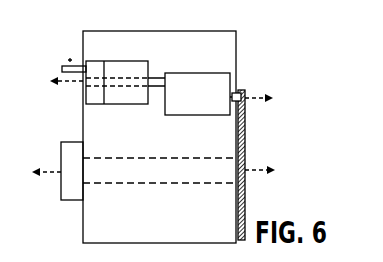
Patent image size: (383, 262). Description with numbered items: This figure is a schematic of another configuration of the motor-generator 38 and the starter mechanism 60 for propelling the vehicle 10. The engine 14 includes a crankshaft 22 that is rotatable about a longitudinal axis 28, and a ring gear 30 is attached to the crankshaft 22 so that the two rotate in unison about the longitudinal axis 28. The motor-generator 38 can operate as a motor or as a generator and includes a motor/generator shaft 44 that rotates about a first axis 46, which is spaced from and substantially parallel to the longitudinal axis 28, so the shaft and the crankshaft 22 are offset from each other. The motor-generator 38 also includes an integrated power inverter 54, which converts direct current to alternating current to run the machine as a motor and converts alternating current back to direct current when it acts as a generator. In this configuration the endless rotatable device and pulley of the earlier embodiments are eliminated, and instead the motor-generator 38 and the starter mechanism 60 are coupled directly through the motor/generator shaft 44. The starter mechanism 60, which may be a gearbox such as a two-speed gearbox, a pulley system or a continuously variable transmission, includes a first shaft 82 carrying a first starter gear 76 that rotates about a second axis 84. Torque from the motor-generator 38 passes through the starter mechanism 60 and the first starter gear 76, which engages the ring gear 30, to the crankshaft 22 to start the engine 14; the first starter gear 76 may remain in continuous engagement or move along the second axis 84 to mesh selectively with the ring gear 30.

The vehicle 10 is at (20, 5).
The engine 14 is at (216, 50).
The crankshaft 22 is at (143, 187).
The longitudinal axis 28 is at (56, 175).
The ring gear 30 is at (247, 163).
The motor-generator 38 is at (124, 115).
The motor/generator shaft 44 is at (152, 77).
The first axis 46 is at (73, 88).
The integrated power inverter 54 is at (90, 60).
The starter mechanism 60 is at (214, 124).
The first starter gear 76 is at (249, 93).
The first shaft 82 is at (238, 92).
The second axis 84 is at (249, 108).